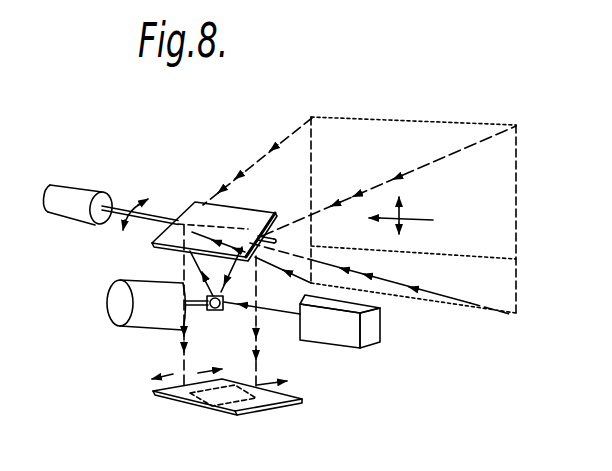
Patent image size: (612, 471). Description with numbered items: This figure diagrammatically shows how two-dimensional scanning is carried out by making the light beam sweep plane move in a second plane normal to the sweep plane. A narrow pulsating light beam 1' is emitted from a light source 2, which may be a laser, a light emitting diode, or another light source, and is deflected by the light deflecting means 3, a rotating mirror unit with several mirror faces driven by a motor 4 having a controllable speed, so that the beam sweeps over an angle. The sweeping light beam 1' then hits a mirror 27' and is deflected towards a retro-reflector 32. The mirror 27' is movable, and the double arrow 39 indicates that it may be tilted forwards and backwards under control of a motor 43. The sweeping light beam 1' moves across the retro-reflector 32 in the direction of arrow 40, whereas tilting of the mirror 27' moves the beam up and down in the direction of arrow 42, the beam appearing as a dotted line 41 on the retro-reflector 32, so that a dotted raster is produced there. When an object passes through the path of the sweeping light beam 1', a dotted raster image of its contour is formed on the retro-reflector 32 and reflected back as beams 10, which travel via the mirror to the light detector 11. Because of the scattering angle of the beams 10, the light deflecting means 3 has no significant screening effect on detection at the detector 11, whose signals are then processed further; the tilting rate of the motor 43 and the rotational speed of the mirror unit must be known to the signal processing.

The pulsating light beam 1' is at (297, 219).
The light source 2 is at (339, 334).
The light deflecting means 3 is at (217, 308).
The motor 4 is at (130, 313).
The beams 10 is at (222, 182).
The light detector 11 is at (268, 406).
The mirror 27' is at (214, 204).
The retro-reflector 32 is at (491, 182).
The double arrow 39 is at (137, 202).
The arrow 40 is at (428, 220).
The dotted line 41 is at (473, 257).
The arrow 42 is at (401, 210).
The motor 43 is at (75, 210).